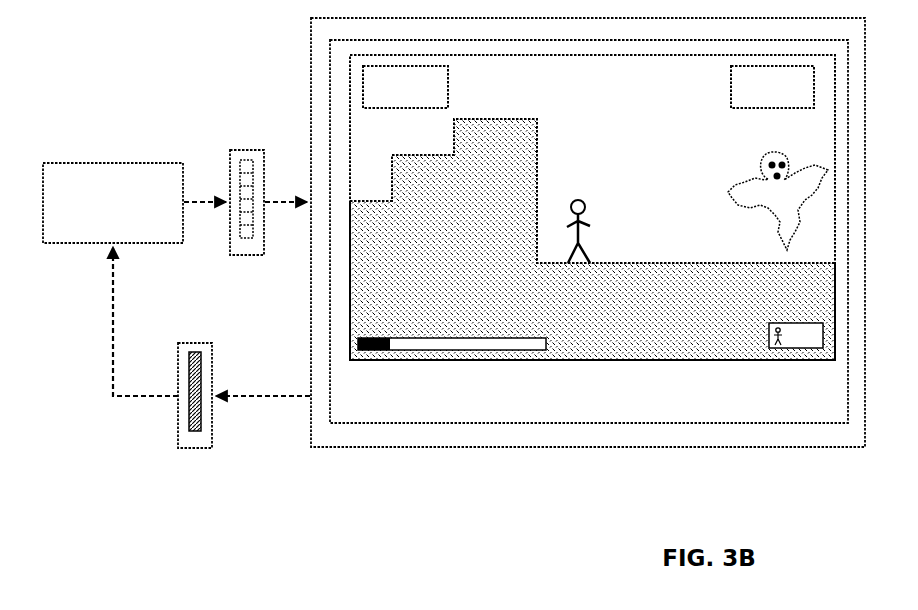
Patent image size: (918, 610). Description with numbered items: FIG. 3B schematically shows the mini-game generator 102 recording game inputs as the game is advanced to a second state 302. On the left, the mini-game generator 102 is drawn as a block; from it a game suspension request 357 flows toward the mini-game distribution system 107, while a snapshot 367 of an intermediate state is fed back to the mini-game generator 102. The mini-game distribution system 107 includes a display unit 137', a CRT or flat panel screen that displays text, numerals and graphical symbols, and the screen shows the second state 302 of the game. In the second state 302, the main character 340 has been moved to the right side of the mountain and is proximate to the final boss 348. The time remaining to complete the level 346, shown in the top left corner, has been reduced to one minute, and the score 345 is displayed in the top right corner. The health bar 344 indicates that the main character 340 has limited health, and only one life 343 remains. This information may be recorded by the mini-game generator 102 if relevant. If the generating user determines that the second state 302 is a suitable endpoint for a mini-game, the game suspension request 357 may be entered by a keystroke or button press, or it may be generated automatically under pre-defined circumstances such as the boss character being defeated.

The mini-game generator 102 is at (118, 162).
The game suspension request 357 is at (250, 257).
The snapshot 367 is at (191, 450).
The mini-game distribution system 107 is at (311, 36).
The display unit 137' is at (589, 264).
The second state 302 is at (595, 97).
The time remaining to complete the level 346 is at (450, 80).
The score 345 is at (731, 93).
The final boss 348 is at (800, 157).
The main character 340 is at (590, 201).
The health bar 344 is at (503, 351).
The lives 343 is at (769, 337).